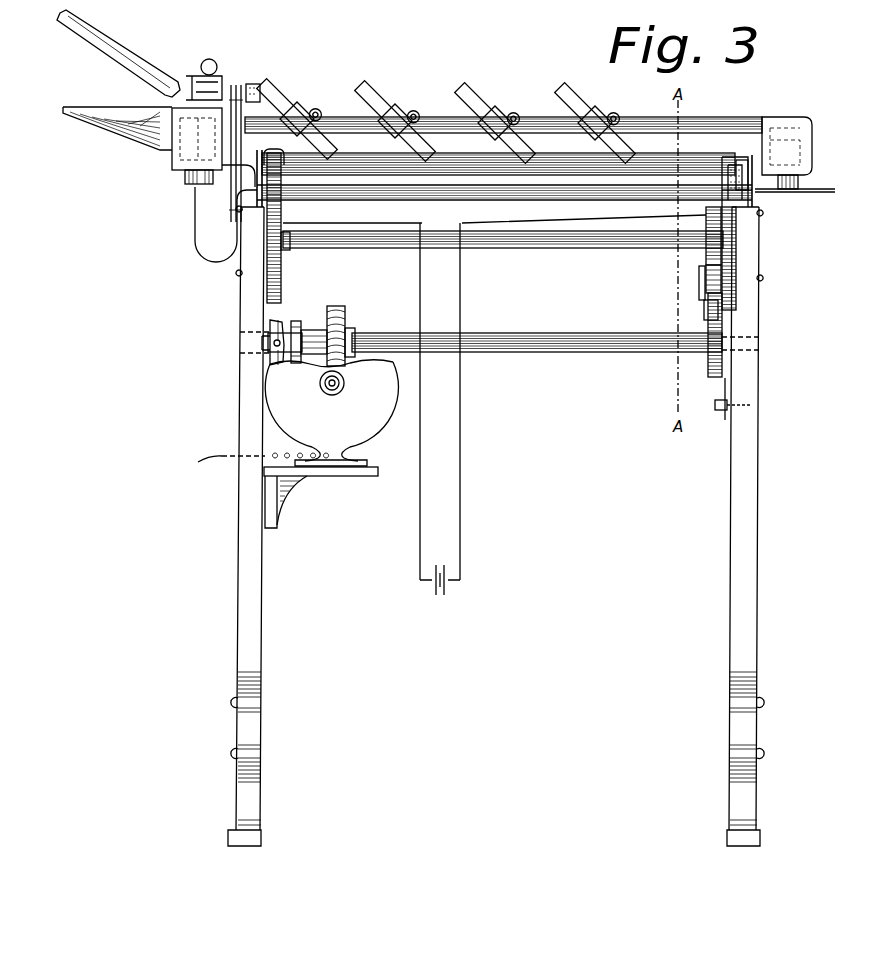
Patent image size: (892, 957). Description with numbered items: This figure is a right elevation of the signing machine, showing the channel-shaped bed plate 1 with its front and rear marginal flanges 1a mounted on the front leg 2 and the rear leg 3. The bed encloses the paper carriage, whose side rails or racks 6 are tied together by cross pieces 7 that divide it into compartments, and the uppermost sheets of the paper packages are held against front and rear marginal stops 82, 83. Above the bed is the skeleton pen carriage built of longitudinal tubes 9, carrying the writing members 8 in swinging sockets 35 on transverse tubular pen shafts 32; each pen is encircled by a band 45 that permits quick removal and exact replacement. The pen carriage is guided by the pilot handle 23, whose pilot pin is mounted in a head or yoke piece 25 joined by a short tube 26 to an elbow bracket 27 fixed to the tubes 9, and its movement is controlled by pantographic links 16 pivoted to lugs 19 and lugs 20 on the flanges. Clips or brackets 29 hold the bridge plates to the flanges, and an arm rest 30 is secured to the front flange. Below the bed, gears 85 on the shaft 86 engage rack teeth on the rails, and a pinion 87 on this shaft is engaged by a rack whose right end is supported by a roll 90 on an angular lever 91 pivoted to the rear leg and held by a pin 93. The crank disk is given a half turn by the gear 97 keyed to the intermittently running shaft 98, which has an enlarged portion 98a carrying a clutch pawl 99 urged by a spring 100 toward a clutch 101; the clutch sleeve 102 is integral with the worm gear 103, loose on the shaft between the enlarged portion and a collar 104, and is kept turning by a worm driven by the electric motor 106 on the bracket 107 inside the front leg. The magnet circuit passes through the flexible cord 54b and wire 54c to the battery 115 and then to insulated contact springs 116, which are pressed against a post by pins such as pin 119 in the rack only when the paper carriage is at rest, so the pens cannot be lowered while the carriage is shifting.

The bed plate 1 is at (456, 200).
The marginal flanges 1a is at (774, 208).
The front leg 2 is at (240, 612).
The rear leg 3 is at (745, 526).
The racks 6 is at (730, 166).
The cross pieces 7 is at (576, 165).
The writing members 8 is at (584, 110).
The longitudinal tubes 9 is at (716, 128).
The pantographic links 16 is at (808, 194).
The lugs 19 is at (184, 178).
The lugs 20 is at (800, 186).
The pilot handle 23 is at (116, 58).
The head or yoke piece 25 is at (220, 74).
The short tube 26 is at (238, 84).
The elbow bracket 27 is at (260, 88).
The clips or brackets 29 is at (178, 135).
The arm rest 30 is at (112, 110).
The tubular pen shafts 32 is at (306, 110).
The swinging sockets 35 is at (398, 108).
The band 45 is at (494, 110).
The flexible cord 54b is at (196, 247).
The wire 54c is at (458, 438).
The front marginal stop 82 is at (278, 148).
The rear marginal stop 83 is at (734, 162).
The gears 85 is at (284, 266).
The shaft 86 is at (510, 250).
The pinion 87 is at (704, 258).
The roll 90 is at (705, 288).
The angular lever 91 is at (722, 380).
The pin 93 is at (716, 410).
The gear 97 is at (706, 352).
The intermittently running shaft 98 is at (578, 352).
The enlarged portion 98a is at (268, 334).
The clutch pawl 99 is at (282, 322).
The spring 100 is at (272, 352).
The clutch 101 is at (296, 326).
The sleeve 102 is at (310, 356).
The worm gear 103 is at (340, 308).
The collar 104 is at (356, 332).
The electric motor 106 is at (331, 413).
The bracket 107 is at (312, 474).
The battery 115 is at (436, 590).
The insulated contact springs 116 is at (704, 228).
The pin 119 is at (700, 272).